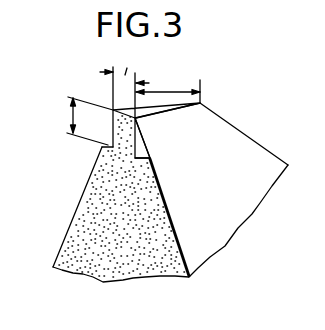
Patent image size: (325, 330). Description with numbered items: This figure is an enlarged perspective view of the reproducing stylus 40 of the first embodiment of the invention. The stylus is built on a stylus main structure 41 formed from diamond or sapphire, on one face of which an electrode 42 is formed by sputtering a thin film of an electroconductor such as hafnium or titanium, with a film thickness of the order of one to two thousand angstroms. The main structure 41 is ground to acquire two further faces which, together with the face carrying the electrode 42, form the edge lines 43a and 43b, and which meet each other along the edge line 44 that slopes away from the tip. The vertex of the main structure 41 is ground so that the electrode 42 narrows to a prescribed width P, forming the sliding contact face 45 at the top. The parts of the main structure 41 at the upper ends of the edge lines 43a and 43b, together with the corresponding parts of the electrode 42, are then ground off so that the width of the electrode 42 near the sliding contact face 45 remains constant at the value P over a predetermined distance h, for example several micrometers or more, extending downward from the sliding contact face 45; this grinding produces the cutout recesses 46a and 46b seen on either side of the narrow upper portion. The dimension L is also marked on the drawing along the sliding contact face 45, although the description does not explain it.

The reproducing stylus 40 is at (240, 81).
The stylus main structure 41 is at (258, 157).
The electrode 42 is at (128, 272).
The edge line 43a is at (180, 248).
The edge line 43b is at (78, 207).
The edge line 44 is at (245, 133).
The sliding contact face 45 is at (155, 113).
The cutout recess 46a is at (150, 158).
The cutout recess 46b is at (110, 146).
The predetermined distance h is at (90, 121).
The prescribed width P is at (124, 66).
The length dimension L is at (168, 80).